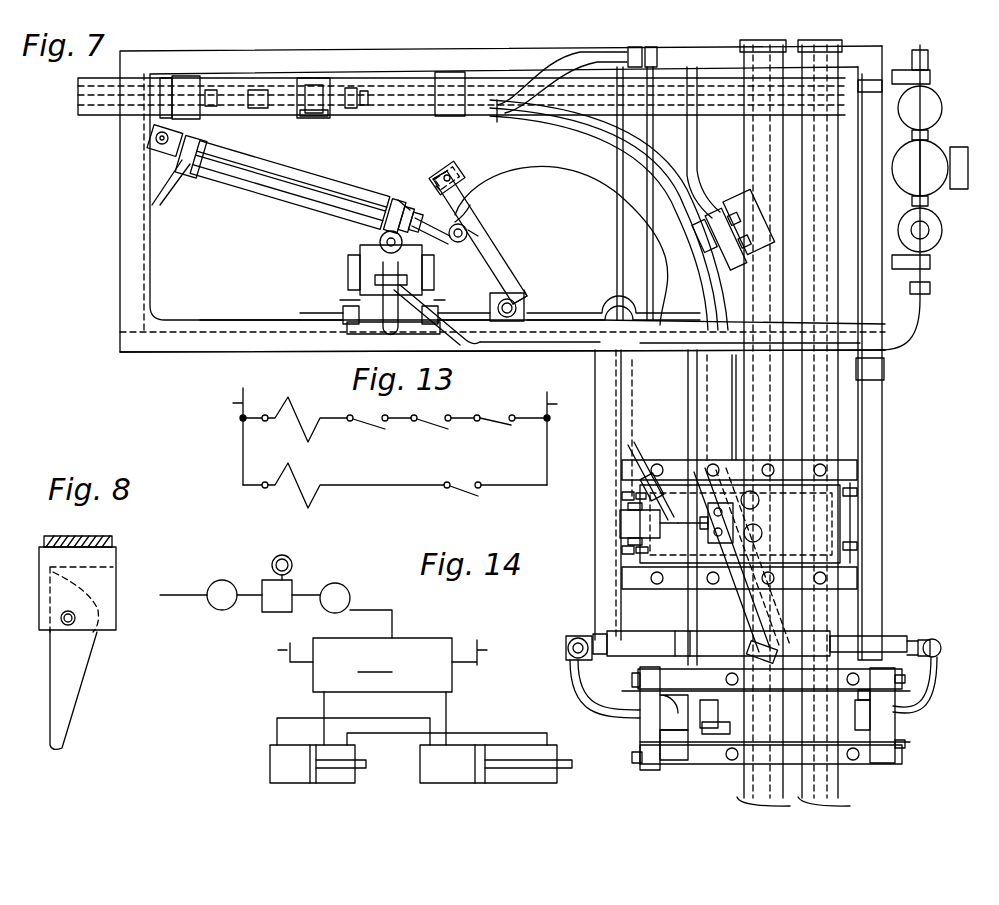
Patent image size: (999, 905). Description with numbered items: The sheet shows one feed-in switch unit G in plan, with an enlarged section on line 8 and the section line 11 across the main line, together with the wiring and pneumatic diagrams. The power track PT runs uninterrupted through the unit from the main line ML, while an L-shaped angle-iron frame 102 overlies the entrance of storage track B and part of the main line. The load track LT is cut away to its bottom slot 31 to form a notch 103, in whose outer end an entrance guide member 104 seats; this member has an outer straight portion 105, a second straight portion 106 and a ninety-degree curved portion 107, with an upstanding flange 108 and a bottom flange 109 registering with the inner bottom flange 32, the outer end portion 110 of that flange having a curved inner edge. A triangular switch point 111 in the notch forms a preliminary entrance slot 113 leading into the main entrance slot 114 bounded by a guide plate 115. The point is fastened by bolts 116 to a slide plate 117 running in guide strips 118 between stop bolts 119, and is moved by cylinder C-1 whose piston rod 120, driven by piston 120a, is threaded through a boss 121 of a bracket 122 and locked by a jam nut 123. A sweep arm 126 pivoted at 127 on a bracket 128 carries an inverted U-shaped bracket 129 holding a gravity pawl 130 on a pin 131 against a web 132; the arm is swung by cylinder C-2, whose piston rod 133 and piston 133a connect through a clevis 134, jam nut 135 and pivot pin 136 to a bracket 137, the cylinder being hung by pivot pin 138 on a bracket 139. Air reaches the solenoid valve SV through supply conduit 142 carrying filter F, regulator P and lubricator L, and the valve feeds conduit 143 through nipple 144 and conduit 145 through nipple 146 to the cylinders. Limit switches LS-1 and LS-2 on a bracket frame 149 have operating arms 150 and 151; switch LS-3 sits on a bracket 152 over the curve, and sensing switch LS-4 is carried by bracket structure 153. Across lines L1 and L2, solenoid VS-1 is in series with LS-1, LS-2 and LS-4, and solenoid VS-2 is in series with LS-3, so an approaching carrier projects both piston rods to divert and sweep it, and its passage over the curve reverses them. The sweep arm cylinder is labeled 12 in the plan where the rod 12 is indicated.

In FIG. 7, the section line 8— 8 is at (413, 187).
In FIG. 7, the section line 11— 11 is at (928, 764).
In FIG. 7, the rod 12 is at (370, 86).
In FIG. 7, the bottom slot 31 is at (748, 730).
In FIG. 7, the inner bottom flange 32 is at (748, 710).
In FIG. 7, the L-shaped frame 102 is at (185, 353).
In FIG. 7, the notch 103 is at (745, 655).
In FIG. 7, the entrance guide member 104 is at (698, 376).
In FIG. 7, the outer straight portion 105 is at (722, 600).
In FIG. 7, the second straight portion 106 is at (700, 405).
In FIG. 7, the curved portion 107 is at (630, 181).
In FIG. 7, the upwardly extending flange 108 is at (710, 238).
In FIG. 7, the bottom flange 109 is at (702, 283).
In FIG. 7, the outer end portion 110 is at (700, 570).
In FIG. 7, the switch point 111 is at (757, 596).
In FIG. 7, the preliminary entrance slot 113 is at (752, 616).
In FIG. 7, the main entrance slot 114 is at (722, 300).
In FIG. 7, the guide plate 115 is at (666, 150).
In FIG. 7, the bolts 116 is at (748, 508).
In FIG. 7, the slide plate 117 is at (845, 548).
In FIG. 7, the guide strips 118 is at (850, 584).
In FIG. 7, the stop bolts 119 is at (857, 546).
In FIG. 7, the piston rod 120 is at (690, 522).
In FIG. 14, the piston rod 120 is at (366, 766).
In FIG. 14, the piston 120a is at (305, 736).
In FIG. 7, the boss 121 is at (702, 530).
In FIG. 7, the bracket 122 is at (740, 460).
In FIG. 7, the jam nut 123 is at (716, 503).
In FIG. 7, the sweep arm 126 is at (492, 250).
In FIG. 8, the sweep arm 126 is at (80, 535).
In FIG. 7, the pivot 127 is at (520, 272).
In FIG. 7, the bracket 128 is at (522, 300).
In FIG. 7, the inverted U-shaped bracket 129 is at (458, 175).
In FIG. 8, the inverted U-shaped bracket 129 is at (116, 628).
In FIG. 7, the gravity operated pawl 130 is at (452, 168).
In FIG. 8, the gravity operated pawl 130 is at (78, 682).
In FIG. 7, the pin 131 is at (440, 170).
In FIG. 8, the pin 131 is at (66, 622).
In FIG. 7, the stop element or web 132 is at (430, 186).
In FIG. 8, the stop element or web 132 is at (45, 598).
In FIG. 7, the piston rod 133 is at (401, 200).
In FIG. 14, the piston rod 133 is at (568, 768).
In FIG. 14, the piston 133a is at (476, 764).
In FIG. 7, the U-shaped clevis 134 is at (470, 230).
In FIG. 7, the jam nut 135 is at (456, 222).
In FIG. 7, the pivot pin 136 is at (470, 240).
In FIG. 7, the bracket 137 is at (458, 248).
In FIG. 7, the pivot pin 138 is at (150, 140).
In FIG. 7, the bracket 139 is at (148, 121).
In FIG. 7, the main air supply conduit 142 is at (905, 352).
In FIG. 14, the main air supply conduit 142 is at (168, 593).
In FIG. 7, the second air conduit 143 is at (478, 326).
In FIG. 14, the second air conduit 143 is at (283, 718).
In FIG. 7, the nipple 144 is at (354, 300).
In FIG. 14, the nipple 144 is at (321, 700).
In FIG. 7, the third air conduit 145 is at (637, 450).
In FIG. 14, the third air conduit 145 is at (505, 733).
In FIG. 7, the nipple 146 is at (440, 292).
In FIG. 14, the nipple 146 is at (452, 700).
In FIG. 7, the bracket frame 149 is at (670, 668).
In FIG. 7, the operating arm 150 is at (692, 740).
In FIG. 7, the operating arm 151 is at (896, 724).
In FIG. 7, the bracket 152 is at (735, 222).
In FIG. 7, the bracket structure 153 is at (345, 104).
In FIG. 7, the storage track B is at (480, 106).
In FIG. 7, the feed-in switch unit G is at (225, 354).
In FIG. 7, the air filter F is at (943, 104).
In FIG. 14, the air filter F is at (222, 580).
In FIG. 7, the pressure regulator P is at (943, 158).
In FIG. 14, the pressure regulator P is at (292, 586).
In FIG. 7, the lubricator L is at (944, 232).
In FIG. 14, the lubricator L is at (338, 592).
In FIG. 7, the solenoid operated valve SV is at (352, 250).
In FIG. 14, the solenoid operated valve SV is at (382, 665).
In FIG. 7, the switch cylinder C-1 is at (624, 527).
In FIG. 14, the switch cylinder C-1 is at (312, 778).
In FIG. 7, the sweep arm cylinder C-2 is at (262, 184).
In FIG. 14, the sweep arm cylinder C-2 is at (488, 778).
In FIG. 7, the limit switch LS-1 is at (658, 732).
In FIG. 13, the limit switch LS-1 is at (356, 424).
In FIG. 7, the limit switch LS-2 is at (895, 728).
In FIG. 13, the limit switch LS-2 is at (436, 421).
In FIG. 7, the limit switch LS-3 is at (720, 250).
In FIG. 13, the limit switch LS-3 is at (468, 487).
In FIG. 7, the sensing switch LS-4 is at (350, 118).
In FIG. 13, the sensing switch LS-4 is at (498, 421).
In FIG. 13, the solenoid VS-1 is at (297, 424).
In FIG. 13, the solenoid VS-2 is at (343, 490).
In FIG. 13, the electric power line L1 is at (229, 436).
In FIG. 14, the electric power line L1 is at (281, 654).
In FIG. 13, the electric power line L2 is at (561, 438).
In FIG. 14, the electric power line L2 is at (480, 652).
In FIG. 7, the load track LT is at (742, 775).
In FIG. 7, the power track PT is at (843, 780).
In FIG. 7, the main line ML is at (846, 801).